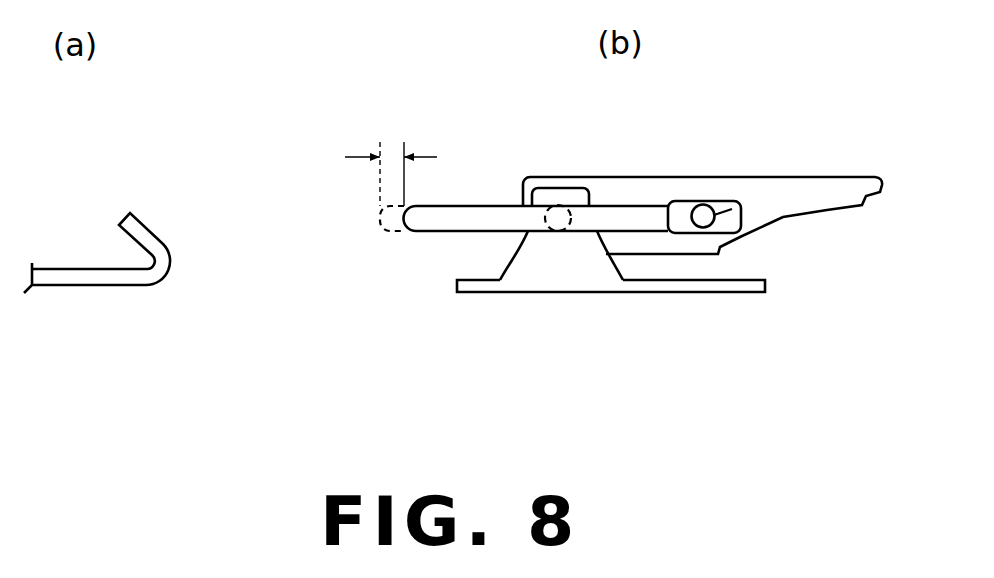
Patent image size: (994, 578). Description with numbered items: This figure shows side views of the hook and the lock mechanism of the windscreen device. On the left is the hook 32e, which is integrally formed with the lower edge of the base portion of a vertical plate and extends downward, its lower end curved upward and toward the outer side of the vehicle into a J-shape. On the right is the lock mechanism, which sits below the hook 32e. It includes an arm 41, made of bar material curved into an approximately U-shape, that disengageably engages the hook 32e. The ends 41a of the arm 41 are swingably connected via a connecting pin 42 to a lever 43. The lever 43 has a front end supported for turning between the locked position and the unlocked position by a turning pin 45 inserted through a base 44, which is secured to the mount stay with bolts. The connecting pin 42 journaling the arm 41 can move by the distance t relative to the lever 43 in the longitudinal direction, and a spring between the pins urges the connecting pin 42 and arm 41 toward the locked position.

The hook 32e is at (98, 285).
The longitudinal movement amount of connecting pin t is at (392, 150).
The arm 41 is at (469, 196).
The end of arm 41a is at (701, 204).
The connecting pin 42 is at (745, 200).
The lever 43 is at (822, 179).
The base 44 is at (470, 293).
The turning pin 45 is at (571, 210).